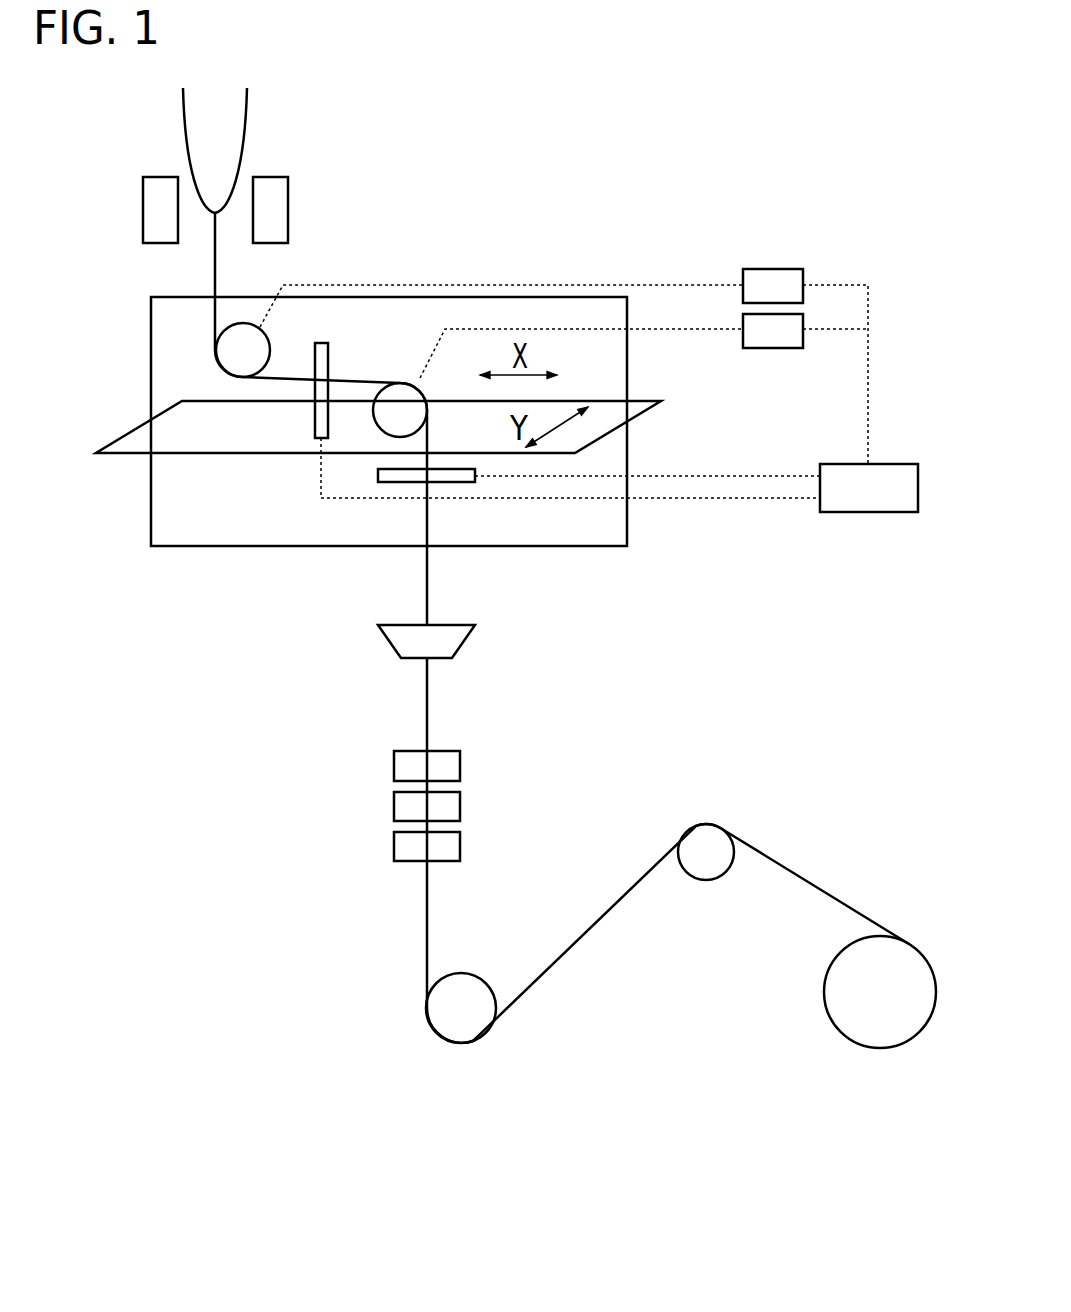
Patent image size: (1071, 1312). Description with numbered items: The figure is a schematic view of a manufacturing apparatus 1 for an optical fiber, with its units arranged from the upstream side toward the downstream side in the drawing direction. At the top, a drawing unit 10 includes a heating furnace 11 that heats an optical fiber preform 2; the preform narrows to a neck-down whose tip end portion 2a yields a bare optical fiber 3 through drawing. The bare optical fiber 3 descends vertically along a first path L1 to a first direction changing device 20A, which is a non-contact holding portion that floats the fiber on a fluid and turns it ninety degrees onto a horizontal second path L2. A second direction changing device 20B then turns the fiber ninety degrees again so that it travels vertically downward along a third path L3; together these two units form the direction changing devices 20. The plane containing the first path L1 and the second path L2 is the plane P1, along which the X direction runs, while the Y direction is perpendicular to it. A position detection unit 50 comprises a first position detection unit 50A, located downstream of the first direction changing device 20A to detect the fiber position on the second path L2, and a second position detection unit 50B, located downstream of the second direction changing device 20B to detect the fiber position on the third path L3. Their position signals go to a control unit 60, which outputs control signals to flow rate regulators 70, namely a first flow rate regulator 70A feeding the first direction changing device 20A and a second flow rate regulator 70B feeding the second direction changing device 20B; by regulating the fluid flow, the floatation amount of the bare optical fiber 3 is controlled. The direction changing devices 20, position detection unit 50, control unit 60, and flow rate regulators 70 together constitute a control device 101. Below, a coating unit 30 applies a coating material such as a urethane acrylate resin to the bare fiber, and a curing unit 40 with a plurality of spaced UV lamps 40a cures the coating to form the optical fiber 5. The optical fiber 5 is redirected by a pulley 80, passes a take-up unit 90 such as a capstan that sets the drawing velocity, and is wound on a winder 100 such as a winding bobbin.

The manufacturing apparatus 1 is at (632, 157).
The optical fiber preform 2 is at (247, 113).
The tip end portion 2a is at (215, 213).
The bare optical fiber 3 is at (215, 268).
The optical fiber 5 is at (815, 887).
The drawing unit 10 is at (160, 175).
The heating furnace 11 is at (143, 208).
The direction changing devices 20 is at (321, 316).
The first direction changing device 20A is at (268, 335).
The second direction changing device 20B is at (410, 383).
The coating unit 30 is at (390, 648).
The curing unit 40 is at (337, 805).
The UV lamp 40a is at (394, 762).
The position detection unit 50 is at (321, 442).
The first position detection unit 50A is at (317, 438).
The second position detection unit 50B is at (403, 482).
The control unit 60 is at (893, 463).
The flow rate regulators 70 is at (837, 325).
The first flow rate regulator 70A is at (773, 268).
The second flow rate regulator 70B is at (772, 349).
The pulley 80 is at (462, 1043).
The take-up unit 90 is at (704, 880).
The winder 100 is at (880, 1048).
The control device 101 is at (600, 326).
The first path L1 is at (215, 332).
The second path L2 is at (345, 378).
The third path L3 is at (427, 522).
The plane P1 is at (627, 364).